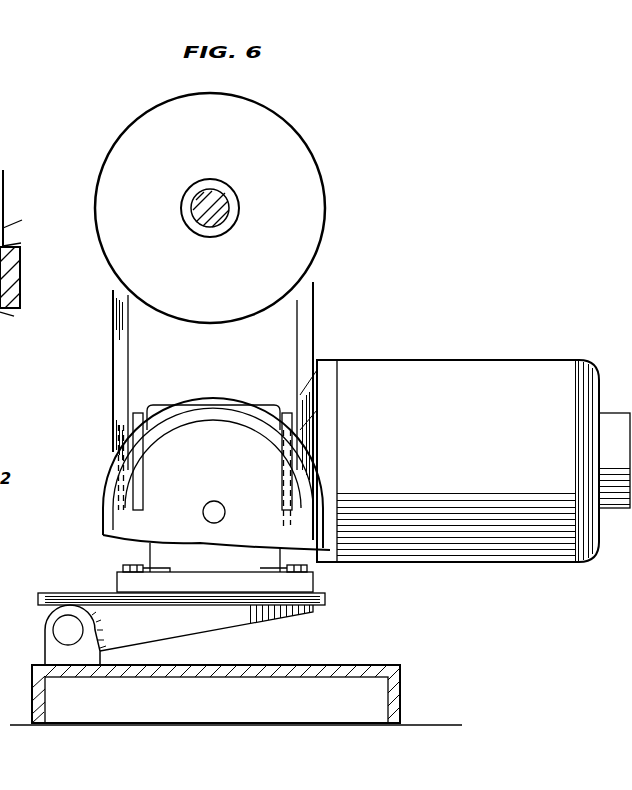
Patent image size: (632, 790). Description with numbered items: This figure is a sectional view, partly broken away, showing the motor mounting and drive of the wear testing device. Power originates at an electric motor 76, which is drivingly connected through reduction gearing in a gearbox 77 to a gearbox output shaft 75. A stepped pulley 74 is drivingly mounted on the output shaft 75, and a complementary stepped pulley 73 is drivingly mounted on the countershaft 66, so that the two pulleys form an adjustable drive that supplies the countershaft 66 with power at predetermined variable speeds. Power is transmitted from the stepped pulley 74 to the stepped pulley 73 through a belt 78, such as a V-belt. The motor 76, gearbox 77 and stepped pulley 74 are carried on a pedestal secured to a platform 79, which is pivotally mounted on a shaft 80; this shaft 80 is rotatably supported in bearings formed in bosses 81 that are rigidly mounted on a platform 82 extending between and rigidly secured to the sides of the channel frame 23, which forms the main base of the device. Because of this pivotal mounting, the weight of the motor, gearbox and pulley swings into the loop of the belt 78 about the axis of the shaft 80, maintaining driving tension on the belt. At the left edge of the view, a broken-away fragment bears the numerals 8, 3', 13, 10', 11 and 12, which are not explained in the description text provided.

The rail 8 is at (2, 212).
The frame member 3' is at (24, 218).
The plate 13 is at (4, 246).
The block 10' is at (27, 277).
The hatched member 11 is at (18, 284).
The lower member 12 is at (4, 310).
The stepped pulley 73 is at (326, 210).
The countershaft 66 is at (222, 210).
The belt 78 is at (302, 323).
The electric motor 76 is at (441, 370).
The gearbox 77 is at (152, 407).
The stepped pulley 74 is at (214, 397).
The gearbox output shaft 75 is at (221, 504).
The platform 79 is at (264, 608).
The shaft 80 is at (60, 630).
The bosses 81 is at (45, 654).
The platform 82 is at (134, 676).
The channel frame 23 is at (42, 700).